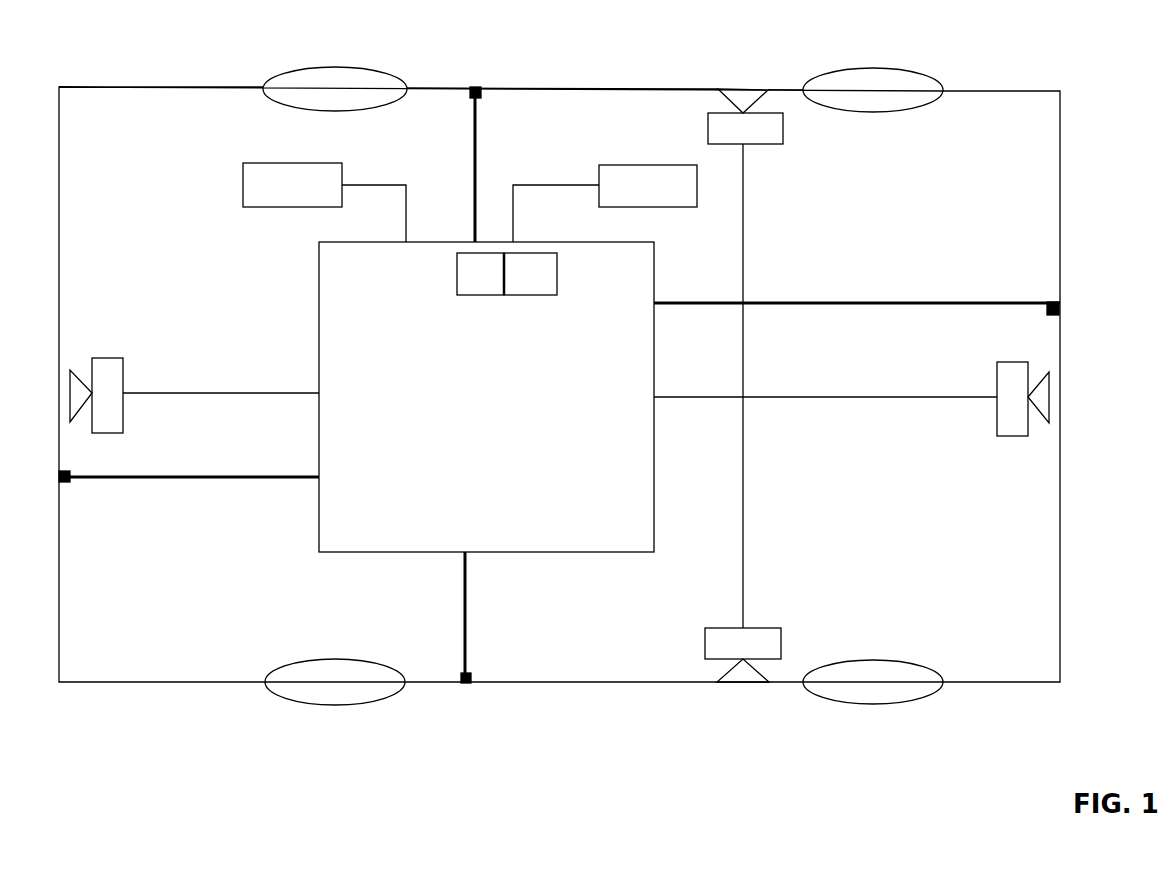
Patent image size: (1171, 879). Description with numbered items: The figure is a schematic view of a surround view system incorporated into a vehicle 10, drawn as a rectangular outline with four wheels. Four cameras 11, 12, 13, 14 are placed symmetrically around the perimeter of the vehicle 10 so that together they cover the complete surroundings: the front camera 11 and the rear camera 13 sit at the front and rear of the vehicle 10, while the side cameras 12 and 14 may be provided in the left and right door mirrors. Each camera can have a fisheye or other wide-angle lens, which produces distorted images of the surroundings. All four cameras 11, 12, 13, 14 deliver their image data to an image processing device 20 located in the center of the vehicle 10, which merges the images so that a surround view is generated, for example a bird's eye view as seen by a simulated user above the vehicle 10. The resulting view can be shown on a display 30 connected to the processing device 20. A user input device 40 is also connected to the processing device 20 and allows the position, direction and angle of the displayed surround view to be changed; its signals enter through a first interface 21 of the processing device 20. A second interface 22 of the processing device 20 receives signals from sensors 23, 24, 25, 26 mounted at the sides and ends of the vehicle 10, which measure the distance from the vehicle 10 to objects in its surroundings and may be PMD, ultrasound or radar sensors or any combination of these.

The vehicle 10 is at (1047, 88).
The camera 11 is at (997, 368).
The side camera 12 is at (705, 637).
The camera 13 is at (123, 368).
The side camera 14 is at (708, 119).
The image processing device 20 is at (319, 542).
The first interface 21 is at (543, 297).
The second interface 22 is at (465, 297).
The sensor 23 is at (1046, 302).
The sensor 24 is at (472, 672).
The sensor 25 is at (67, 484).
The sensor 26 is at (484, 98).
The display 30 is at (342, 170).
The user input device 40 is at (599, 170).